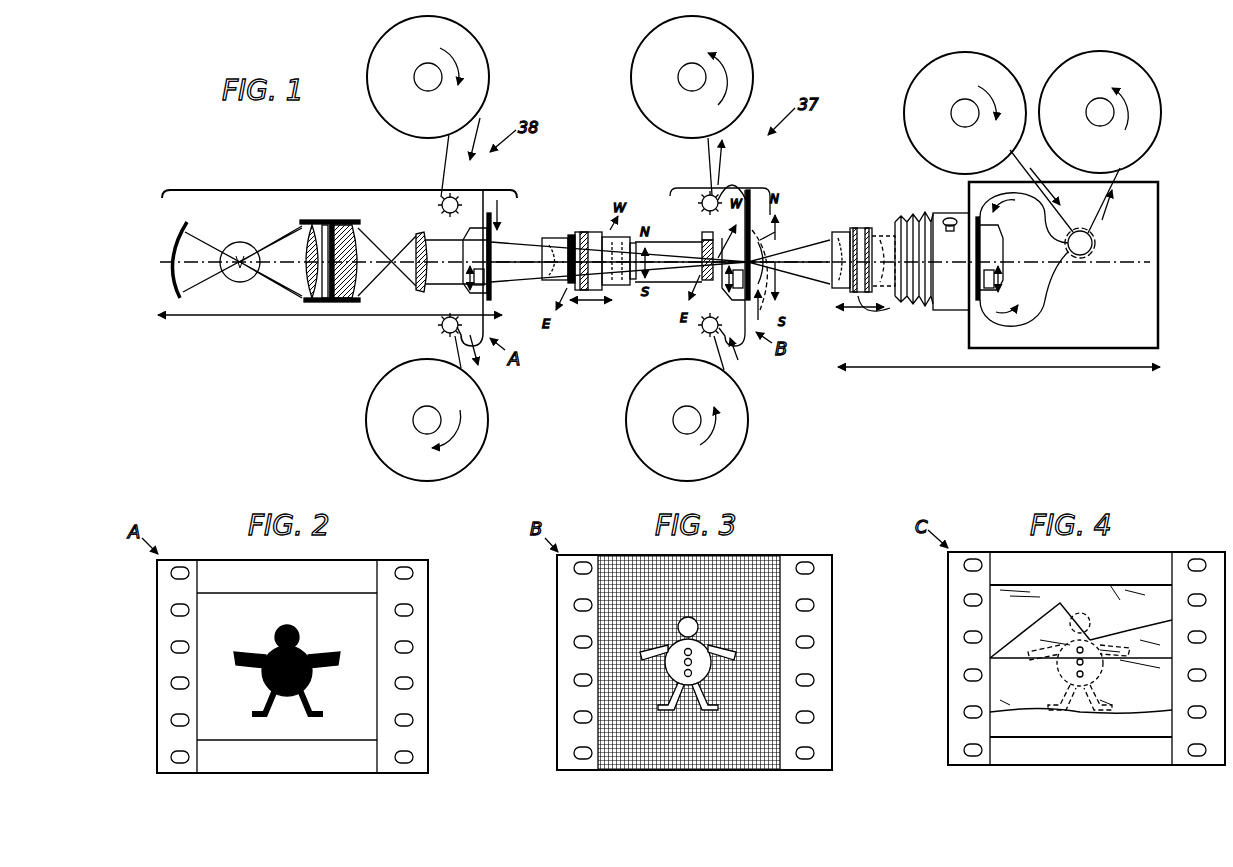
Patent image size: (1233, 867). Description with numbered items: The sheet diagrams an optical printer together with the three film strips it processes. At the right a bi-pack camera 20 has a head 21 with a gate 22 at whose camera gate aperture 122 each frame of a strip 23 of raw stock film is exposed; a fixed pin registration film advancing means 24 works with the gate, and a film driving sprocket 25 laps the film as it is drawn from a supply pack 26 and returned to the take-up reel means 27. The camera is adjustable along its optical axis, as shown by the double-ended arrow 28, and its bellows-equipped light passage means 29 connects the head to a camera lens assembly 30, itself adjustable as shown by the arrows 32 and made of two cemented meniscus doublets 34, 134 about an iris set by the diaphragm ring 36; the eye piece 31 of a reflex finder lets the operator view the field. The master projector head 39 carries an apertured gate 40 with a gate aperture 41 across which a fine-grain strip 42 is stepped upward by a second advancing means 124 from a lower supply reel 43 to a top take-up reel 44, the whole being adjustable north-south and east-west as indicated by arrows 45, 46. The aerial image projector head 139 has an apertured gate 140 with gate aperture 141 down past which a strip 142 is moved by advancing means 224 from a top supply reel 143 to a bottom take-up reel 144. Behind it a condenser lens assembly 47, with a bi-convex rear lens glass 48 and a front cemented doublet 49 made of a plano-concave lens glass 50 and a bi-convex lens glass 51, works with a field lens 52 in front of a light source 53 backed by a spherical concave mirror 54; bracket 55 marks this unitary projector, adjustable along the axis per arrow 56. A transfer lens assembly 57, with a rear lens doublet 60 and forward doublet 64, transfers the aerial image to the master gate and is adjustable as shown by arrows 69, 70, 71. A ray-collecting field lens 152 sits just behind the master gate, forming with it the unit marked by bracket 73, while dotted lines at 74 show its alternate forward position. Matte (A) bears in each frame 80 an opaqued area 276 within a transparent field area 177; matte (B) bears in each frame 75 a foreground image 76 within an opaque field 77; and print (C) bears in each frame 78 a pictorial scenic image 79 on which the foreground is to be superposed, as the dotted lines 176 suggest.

In FIG. 1, the camera 20 is at (1164, 178).
In FIG. 1, the head 21 is at (1040, 270).
In FIG. 1, the gate 22 is at (976, 300).
In FIG. 1, the strip of plural-frame raw stock film 23 is at (1000, 188).
In FIG. 1, the fixed pin registration film advancing means 24 is at (1002, 280).
In FIG. 1, the film driving sprocket 25 is at (1092, 245).
In FIG. 1, the supply pack 26 is at (985, 55).
In FIG. 1, the take-up reel means 27 is at (1138, 58).
In FIG. 1, the double-ended arrow 28 is at (992, 368).
In FIG. 1, the bellows-equipped light passage means 29 is at (910, 222).
In FIG. 1, the camera lens assembly 30 is at (858, 228).
In FIG. 1, the eye piece 31 is at (948, 218).
In FIG. 1, the double-ended arrows 32 is at (856, 308).
In FIG. 1, the cemented meniscus doublet 34 is at (832, 236).
In FIG. 1, the iris or diaphragm ring 36 is at (883, 313).
In FIG. 1, the master projector head 39 is at (728, 296).
In FIG. 1, the apertured gate 40 is at (752, 200).
In FIG. 1, the gate aperture 41 is at (762, 238).
In FIG. 1, the strip of plural-frame motion picture film 42 is at (708, 155).
In FIG. 1, the lower supply reel 43 is at (748, 430).
In FIG. 1, the top take-up reel 44 is at (752, 62).
In FIG. 1, the double-headed arrow 45 is at (765, 250).
In FIG. 1, the double-headed oblique arrow 46 is at (706, 212).
In FIG. 1, the condenser lens assembly 47 is at (312, 218).
In FIG. 1, the bi-convex rear lens glass 48 is at (305, 298).
In FIG. 1, the front cemented doublet 49 is at (342, 298).
In FIG. 1, the plano-concave lens glass 50 is at (330, 230).
In FIG. 1, the bi-convex lens glass 51 is at (352, 232).
In FIG. 1, the field lens 52 is at (419, 230).
In FIG. 1, the light source 53 is at (238, 240).
In FIG. 1, the spherical concave mirror 54 is at (178, 240).
In FIG. 1, the bracket 55 is at (340, 190).
In FIG. 1, the double-headed arrow 56 is at (240, 315).
In FIG. 1, the transfer lens assembly 57 is at (576, 232).
In FIG. 1, the lens doublet 60 is at (558, 238).
In FIG. 1, the doublet 64 is at (622, 238).
In FIG. 1, the double-headed arrow 69 is at (650, 258).
In FIG. 1, the oblique double-headed arrow 70 is at (593, 230).
In FIG. 1, the double-headed arrow 71 is at (590, 302).
In FIG. 1, the bracket 73 is at (733, 178).
In FIG. 1, the field lens position 74 is at (766, 322).
In FIG. 3, the frame 75 is at (622, 572).
In FIG. 3, the foreground image 76 is at (780, 625).
In FIG. 3, the opaque field 77 is at (762, 575).
In FIG. 4, the frame 78 is at (1140, 582).
In FIG. 4, the pictorial scenic image 79 is at (1017, 605).
In FIG. 2, the frame 80 is at (330, 592).
In FIG. 1, the camera gate aperture 122 is at (1000, 236).
In FIG. 1, the fixed pin registration film advancing means 124 is at (736, 292).
In FIG. 1, the cemented meniscus doublet 134 is at (882, 235).
In FIG. 1, the aerial image projector head 139 is at (462, 290).
In FIG. 1, the apertured gate 140 is at (492, 222).
In FIG. 1, the gate aperture 141 is at (492, 242).
In FIG. 1, the strip of plural-frame motion picture film 142 is at (480, 180).
In FIG. 1, the top supply reel 143 is at (488, 64).
In FIG. 1, the bottom take-up reel 144 is at (488, 430).
In FIG. 1, the ray-collecting field lens 152 is at (700, 325).
In FIG. 4, the dotted lines 176 is at (1060, 682).
In FIG. 2, the transparent field area 177 is at (222, 638).
In FIG. 1, the fixed pin registration film advancing means 224 is at (490, 290).
In FIG. 2, the opaqued area 276 is at (325, 646).